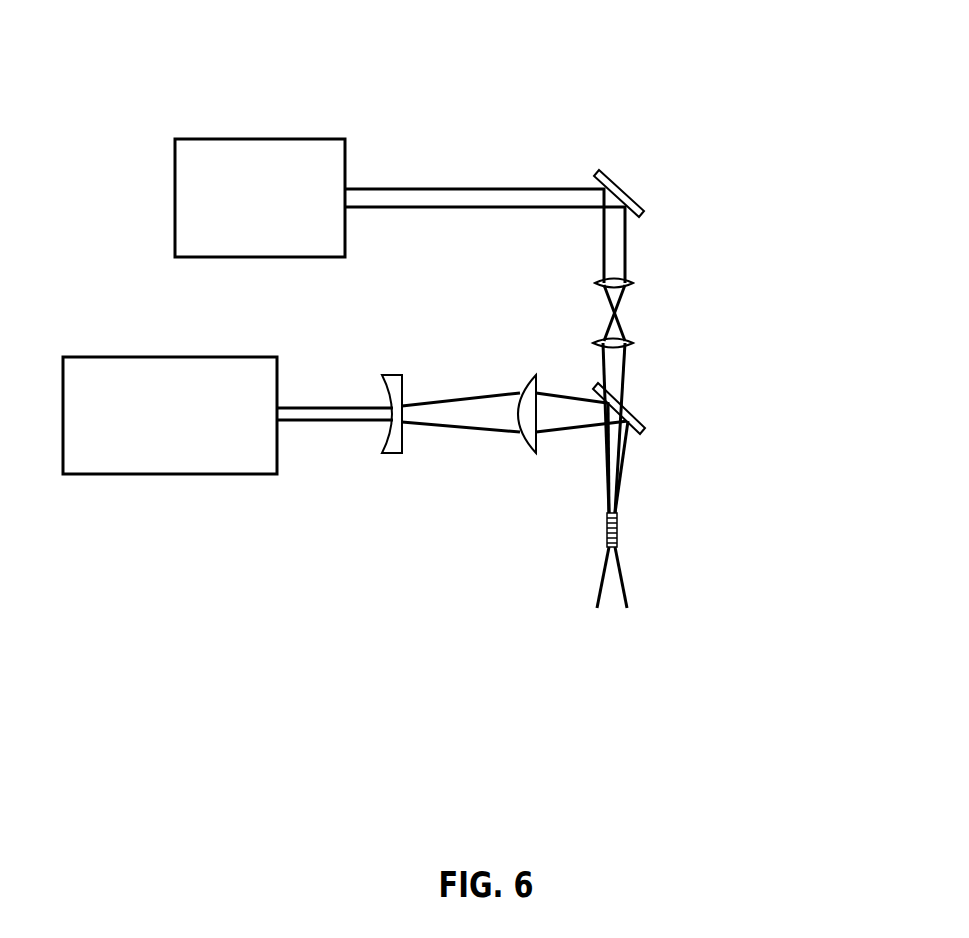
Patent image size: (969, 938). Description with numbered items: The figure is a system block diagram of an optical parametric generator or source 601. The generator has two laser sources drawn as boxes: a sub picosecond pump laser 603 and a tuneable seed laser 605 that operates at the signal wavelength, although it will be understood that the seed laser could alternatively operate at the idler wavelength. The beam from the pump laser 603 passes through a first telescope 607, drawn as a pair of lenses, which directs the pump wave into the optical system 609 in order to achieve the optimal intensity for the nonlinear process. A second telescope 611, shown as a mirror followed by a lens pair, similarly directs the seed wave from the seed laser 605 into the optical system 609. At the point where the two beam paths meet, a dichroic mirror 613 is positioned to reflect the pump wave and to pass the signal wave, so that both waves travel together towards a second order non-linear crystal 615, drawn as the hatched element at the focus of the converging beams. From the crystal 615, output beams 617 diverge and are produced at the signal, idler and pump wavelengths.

The optical parametric generator 601 is at (412, 320).
The sub picosecond pump laser 603 is at (170, 415).
The tuneable seed laser 605 is at (260, 198).
The first telescope 607 is at (552, 463).
The optical system 609 is at (630, 472).
The second telescope 611 is at (661, 180).
The dichroic mirror 613 is at (647, 428).
The second order non-linear crystal 615 is at (619, 532).
The output beams 617 is at (614, 604).